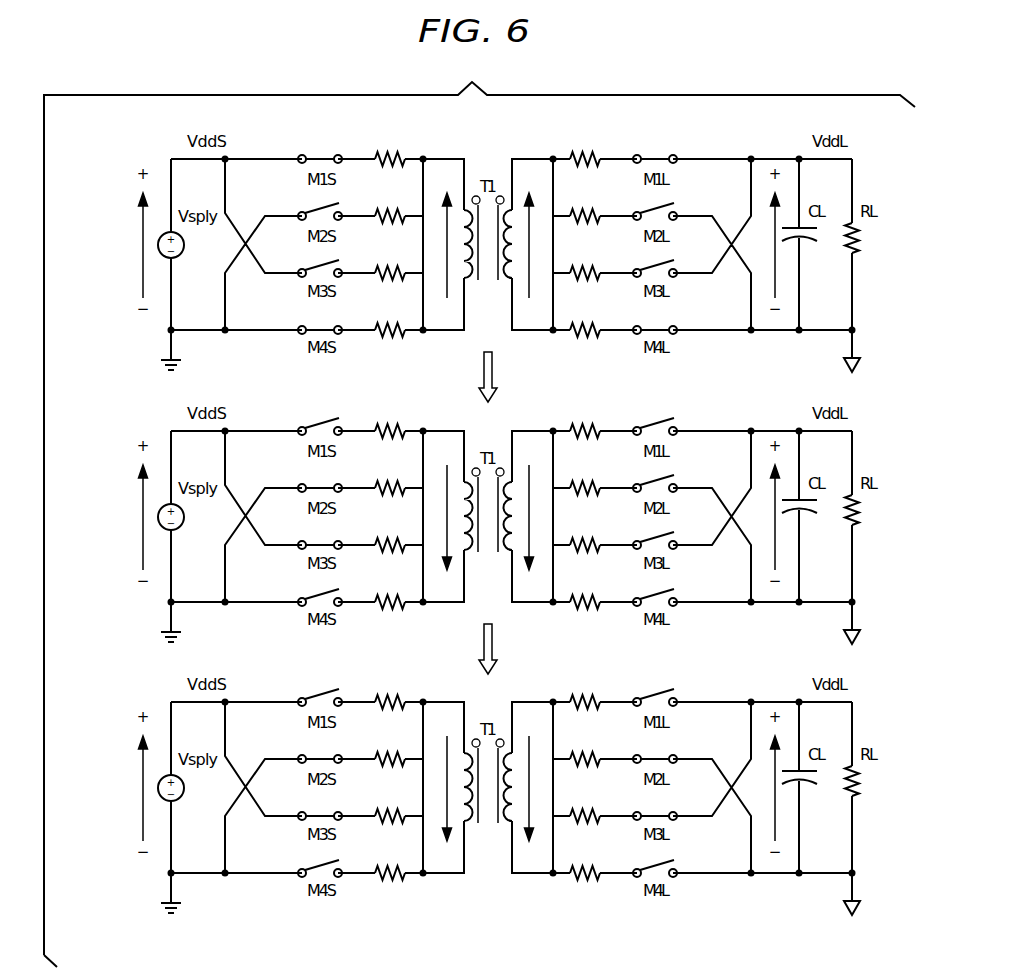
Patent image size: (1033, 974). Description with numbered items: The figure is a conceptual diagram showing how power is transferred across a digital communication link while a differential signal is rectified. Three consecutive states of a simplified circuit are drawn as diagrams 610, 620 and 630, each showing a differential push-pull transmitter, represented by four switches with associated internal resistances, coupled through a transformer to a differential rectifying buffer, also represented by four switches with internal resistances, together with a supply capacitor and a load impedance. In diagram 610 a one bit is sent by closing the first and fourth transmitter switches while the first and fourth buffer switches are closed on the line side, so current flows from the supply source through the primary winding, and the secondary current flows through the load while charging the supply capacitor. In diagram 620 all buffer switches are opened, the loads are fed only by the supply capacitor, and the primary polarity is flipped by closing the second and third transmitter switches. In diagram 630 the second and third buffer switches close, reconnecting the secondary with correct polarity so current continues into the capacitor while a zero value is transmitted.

The diagram 610 is at (113, 151).
The diagram 620 is at (471, 524).
The diagram 630 is at (471, 795).